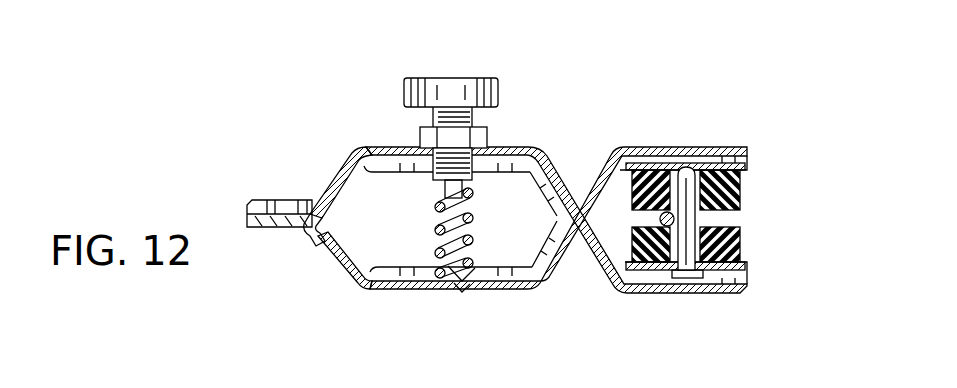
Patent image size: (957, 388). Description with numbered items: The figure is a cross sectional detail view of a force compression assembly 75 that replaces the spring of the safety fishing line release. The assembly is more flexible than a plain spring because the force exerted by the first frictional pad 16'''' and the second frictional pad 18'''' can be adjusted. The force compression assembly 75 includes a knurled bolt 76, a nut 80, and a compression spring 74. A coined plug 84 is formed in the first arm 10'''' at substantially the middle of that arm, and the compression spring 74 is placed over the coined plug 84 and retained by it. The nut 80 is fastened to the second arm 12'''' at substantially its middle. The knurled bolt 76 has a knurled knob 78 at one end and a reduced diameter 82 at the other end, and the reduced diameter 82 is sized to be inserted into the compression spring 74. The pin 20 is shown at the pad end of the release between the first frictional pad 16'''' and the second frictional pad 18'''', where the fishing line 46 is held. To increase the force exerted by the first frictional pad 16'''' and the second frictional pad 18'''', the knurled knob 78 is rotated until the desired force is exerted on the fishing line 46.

The first arm 10'''' is at (497, 244).
The second arm 12'''' is at (301, 166).
The first frictional pad 16'''' is at (750, 183).
The second frictional pad 18'''' is at (755, 255).
The pivot pin 20 is at (686, 190).
The fishing line 46 is at (672, 262).
The compression spring 74 is at (478, 255).
The force compression assembly 75 is at (460, 107).
The knurled bolt 76 is at (433, 116).
The knurled knob 78 is at (497, 78).
The nut 80 is at (490, 135).
The reduced diameter 82 is at (473, 205).
The coined plug 84 is at (452, 290).